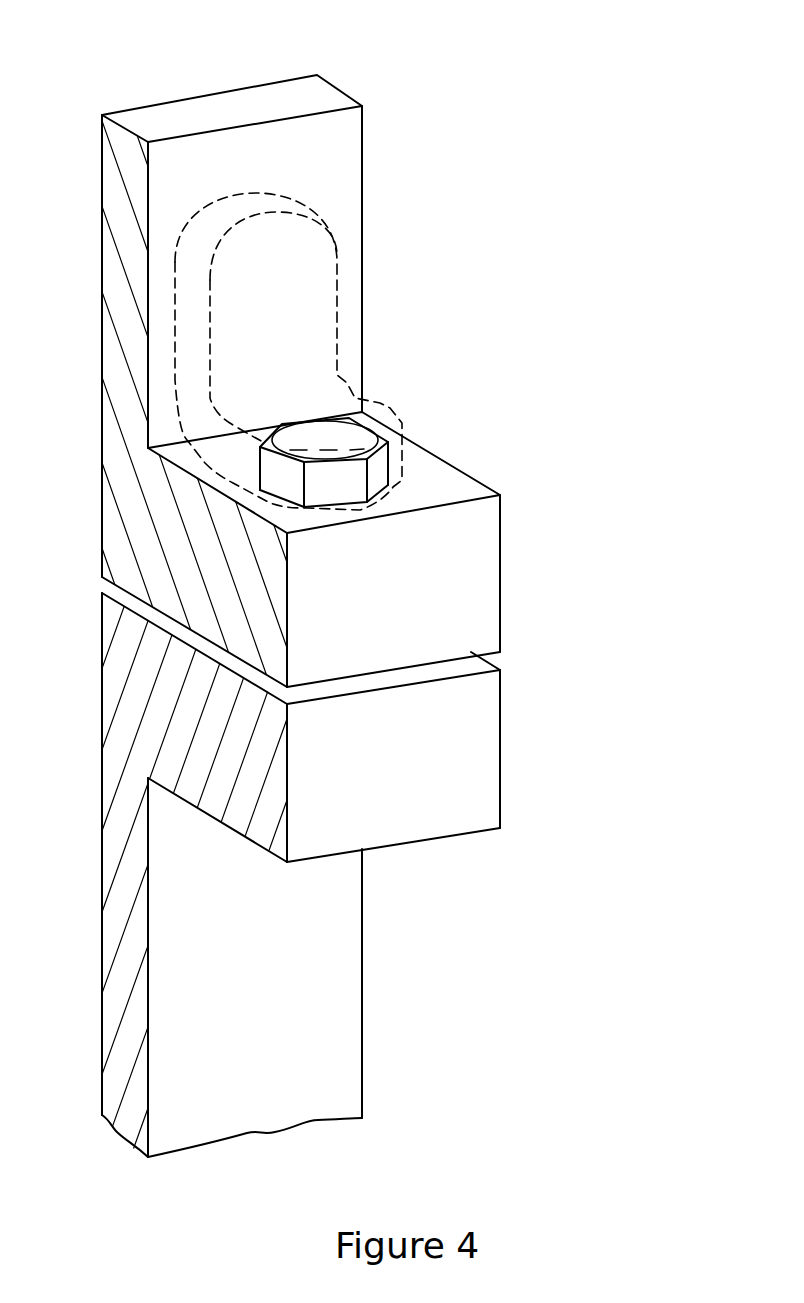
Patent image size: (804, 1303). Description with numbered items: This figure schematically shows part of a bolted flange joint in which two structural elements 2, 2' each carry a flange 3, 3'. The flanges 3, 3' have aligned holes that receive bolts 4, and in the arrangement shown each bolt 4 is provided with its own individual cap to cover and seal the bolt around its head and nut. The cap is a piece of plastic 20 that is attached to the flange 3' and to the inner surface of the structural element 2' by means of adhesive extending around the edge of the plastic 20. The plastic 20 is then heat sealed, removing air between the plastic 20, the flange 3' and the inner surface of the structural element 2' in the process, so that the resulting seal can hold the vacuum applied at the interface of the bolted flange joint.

The structural element 2 is at (182, 350).
The structural element 2' is at (235, 875).
The flange 3 is at (370, 549).
The flange 3' is at (342, 727).
The bolt 4 is at (287, 473).
The plastic 20 is at (338, 282).